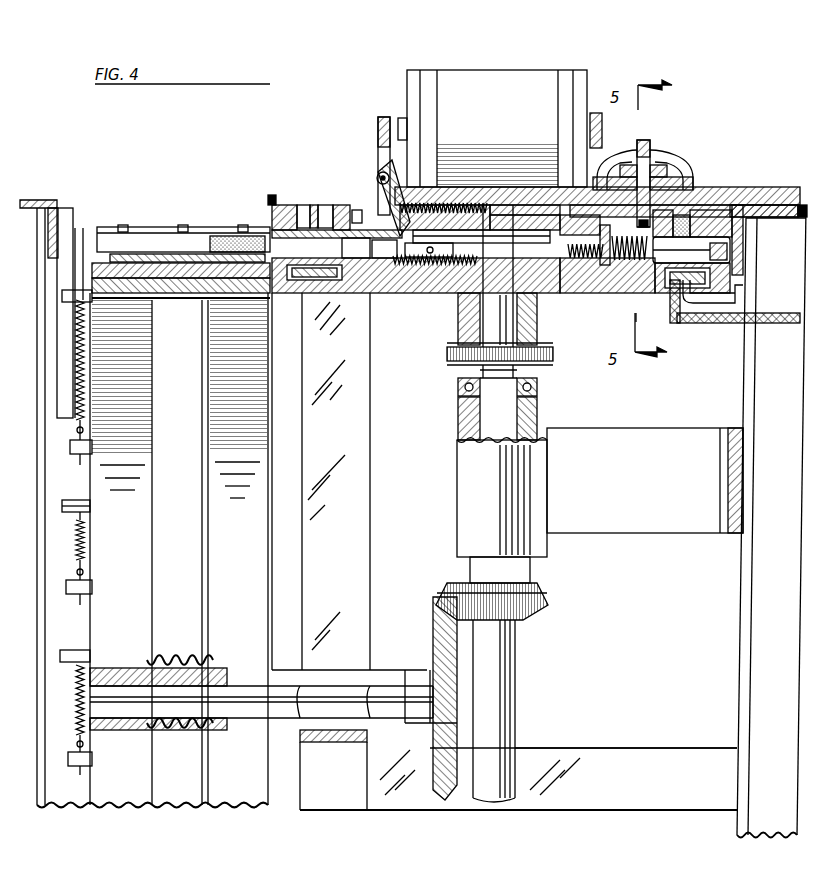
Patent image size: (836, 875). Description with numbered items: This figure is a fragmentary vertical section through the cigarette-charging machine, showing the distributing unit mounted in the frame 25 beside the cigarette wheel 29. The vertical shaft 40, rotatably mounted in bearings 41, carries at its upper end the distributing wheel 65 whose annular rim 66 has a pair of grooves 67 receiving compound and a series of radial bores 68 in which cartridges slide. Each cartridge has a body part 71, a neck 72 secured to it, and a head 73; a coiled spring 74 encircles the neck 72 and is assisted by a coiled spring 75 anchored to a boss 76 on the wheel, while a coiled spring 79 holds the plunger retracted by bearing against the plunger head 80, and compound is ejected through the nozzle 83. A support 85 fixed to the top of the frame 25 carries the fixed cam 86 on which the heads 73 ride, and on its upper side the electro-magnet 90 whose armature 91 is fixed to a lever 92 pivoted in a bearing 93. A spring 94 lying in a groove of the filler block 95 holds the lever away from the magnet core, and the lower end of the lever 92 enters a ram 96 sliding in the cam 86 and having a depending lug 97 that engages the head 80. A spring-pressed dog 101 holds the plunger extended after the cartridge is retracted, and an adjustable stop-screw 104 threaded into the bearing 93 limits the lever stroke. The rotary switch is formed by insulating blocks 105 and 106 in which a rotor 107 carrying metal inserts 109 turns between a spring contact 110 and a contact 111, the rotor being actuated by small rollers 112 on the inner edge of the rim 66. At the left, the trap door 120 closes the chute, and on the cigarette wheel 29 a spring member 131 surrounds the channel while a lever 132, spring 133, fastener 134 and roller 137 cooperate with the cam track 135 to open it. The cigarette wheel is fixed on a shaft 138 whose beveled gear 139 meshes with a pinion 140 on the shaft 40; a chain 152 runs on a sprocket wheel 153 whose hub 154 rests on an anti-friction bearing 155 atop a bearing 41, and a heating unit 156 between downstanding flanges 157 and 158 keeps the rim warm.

The frame 25 is at (760, 780).
The cigarette wheel 29 is at (135, 782).
The vertical shaft 40 is at (515, 770).
The bearings 41 is at (660, 515).
The distributing wheel 65 is at (320, 300).
The annular rim 66 is at (270, 213).
The grooves 67 is at (277, 187).
The radially disposed bores 68 is at (733, 232).
The body part 71 is at (330, 210).
The neck 72 is at (360, 295).
The head 73 is at (388, 290).
The coiled spring 74 is at (630, 293).
The coiled spring 75 is at (425, 295).
The boss 76 is at (575, 262).
The coiled spring 79 is at (610, 262).
The head 80 is at (528, 185).
The nozzle 83 is at (728, 260).
The support 85 is at (770, 190).
The fixed cam 86 is at (572, 258).
The electro-magnet 90 is at (458, 75).
The armature 91 is at (385, 115).
The lever 92 is at (380, 153).
The bearing 93 is at (370, 170).
The spring 94 is at (445, 200).
The filler block 95 is at (500, 215).
The ram 96 is at (520, 228).
The depending lug 97 is at (448, 228).
The spring-pressed dog 101 is at (450, 280).
The adjustable stop-screw 104 is at (367, 203).
The block 105 is at (612, 160).
The block 106 is at (683, 185).
The rotor 107 is at (650, 140).
The metal inserts 109 is at (643, 140).
The spring contact 110 is at (613, 163).
The contact 111 is at (683, 172).
The small rollers 112 is at (693, 203).
The trap door 120 is at (293, 203).
The spring member 131 is at (180, 226).
The lever 132 is at (88, 522).
The spring 133 is at (84, 556).
The fastener 134 is at (90, 598).
The cam track 135 is at (67, 233).
The roller 137 is at (75, 505).
The shaft 138 is at (178, 688).
The beveled gear 139 is at (430, 773).
The pinion 140 is at (548, 595).
The chain 152 is at (452, 363).
The sprocket wheel 153 is at (456, 385).
The hub 154 is at (540, 373).
The anti-friction bearing 155 is at (458, 410).
The heating unit 156 is at (300, 300).
The downstanding flange 157 is at (636, 318).
The downstanding flange 158 is at (722, 310).